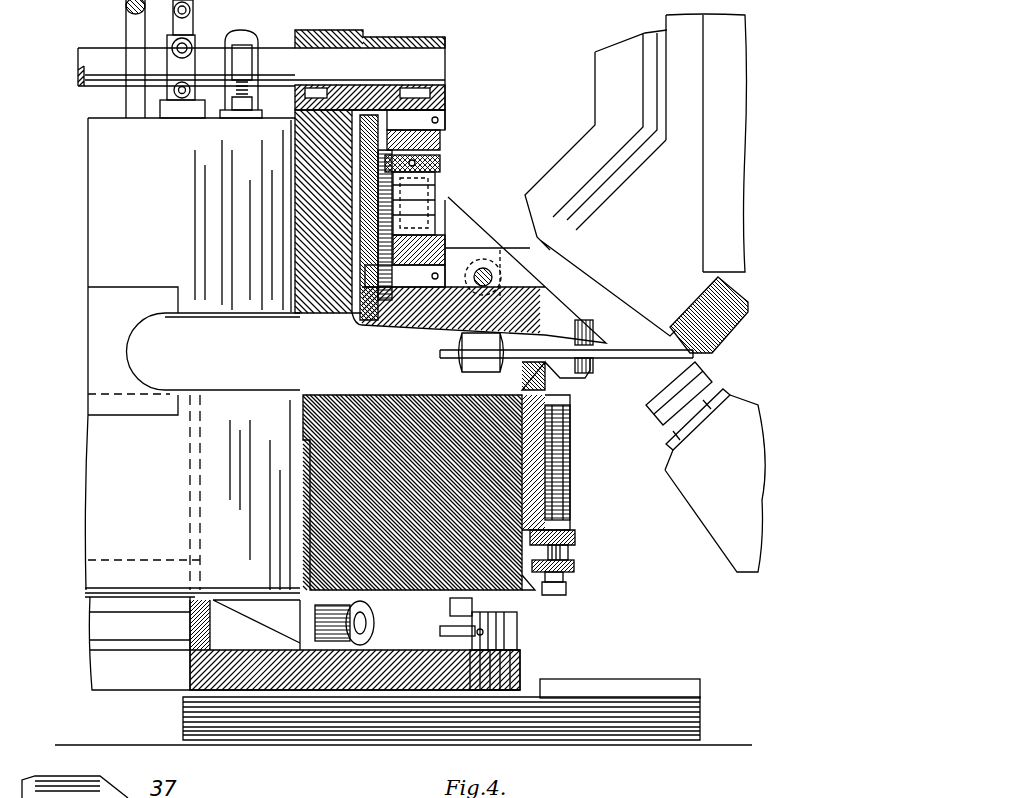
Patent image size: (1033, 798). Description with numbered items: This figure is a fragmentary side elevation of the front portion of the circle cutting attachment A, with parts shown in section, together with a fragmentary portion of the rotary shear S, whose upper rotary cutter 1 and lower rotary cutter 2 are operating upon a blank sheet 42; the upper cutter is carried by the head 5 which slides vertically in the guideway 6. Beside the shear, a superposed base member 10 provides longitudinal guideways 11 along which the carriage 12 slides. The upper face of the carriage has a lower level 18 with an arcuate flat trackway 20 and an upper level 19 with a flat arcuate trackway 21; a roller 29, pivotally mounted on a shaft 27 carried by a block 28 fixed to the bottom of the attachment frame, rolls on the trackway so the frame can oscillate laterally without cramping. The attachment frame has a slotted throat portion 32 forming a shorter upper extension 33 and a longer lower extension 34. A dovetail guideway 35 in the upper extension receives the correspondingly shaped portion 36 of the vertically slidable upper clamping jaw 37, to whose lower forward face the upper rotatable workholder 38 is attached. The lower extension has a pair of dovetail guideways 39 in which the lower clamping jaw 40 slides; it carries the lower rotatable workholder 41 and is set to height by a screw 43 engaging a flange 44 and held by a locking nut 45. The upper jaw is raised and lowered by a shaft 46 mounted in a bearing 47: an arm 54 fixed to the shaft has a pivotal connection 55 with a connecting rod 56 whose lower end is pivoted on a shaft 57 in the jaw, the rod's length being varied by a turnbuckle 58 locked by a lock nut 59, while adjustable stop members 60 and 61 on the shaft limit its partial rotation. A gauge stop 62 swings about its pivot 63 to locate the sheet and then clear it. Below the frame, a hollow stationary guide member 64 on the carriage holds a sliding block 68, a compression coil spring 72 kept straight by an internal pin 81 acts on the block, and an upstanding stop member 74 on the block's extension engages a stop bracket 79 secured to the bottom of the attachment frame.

The upper rotary cutter 1 is at (745, 310).
The lower rotary cutter 2 is at (712, 387).
The head 5 is at (600, 183).
The guideway 6 is at (728, 72).
The rotary shear S is at (748, 190).
The circle cutting attachment A is at (100, 192).
The superposed base member 10 is at (693, 722).
The longitudinal guideways 11 is at (700, 688).
The carriage 12 is at (92, 673).
The lower level 18 is at (355, 645).
The upper level 19 is at (200, 544).
The arcuate flat trackway 20 is at (375, 645).
The flat arcuate trackway 21 is at (118, 589).
The shaft 27 is at (368, 630).
The block 28 is at (208, 602).
The roller 29 is at (352, 614).
The slotted throat portion 32 is at (213, 351).
The upper extension 33 is at (243, 216).
The lower extension 34 is at (252, 495).
The dovetail guideway 35 is at (355, 198).
The correspondingly shaped portion 36 is at (372, 183).
The upper clamping jaw 37 is at (468, 247).
The upper rotatable workholder 38 is at (585, 340).
The dovetail guideways 39 is at (560, 486).
The lower clamping jaw 40 is at (547, 466).
The lower rotatable workholder 41 is at (578, 382).
The blank sheet 42 is at (630, 350).
The screw 43 is at (570, 550).
The flange 44 is at (575, 566).
The locking nut 45 is at (578, 575).
The shaft 46 is at (86, 58).
The bearing 47 is at (320, 36).
The arm 54 is at (440, 100).
The pivotal connection 55 is at (446, 118).
The connecting rod 56 is at (420, 150).
The shaft 57 is at (363, 335).
The turnbuckle 58 is at (440, 190).
The lock nut 59 is at (441, 165).
The adjustable stop member 60 is at (222, 95).
The adjustable stop member 61 is at (190, 60).
The gauge stop 62 is at (466, 365).
The pivot 63 is at (493, 279).
The hollow stationary guide member 64 is at (518, 616).
The block 68 is at (518, 636).
The compression coil spring 72 is at (515, 652).
The upstanding stop member 74 is at (452, 612).
The stop bracket 79 is at (525, 590).
The pin 81 is at (445, 640).